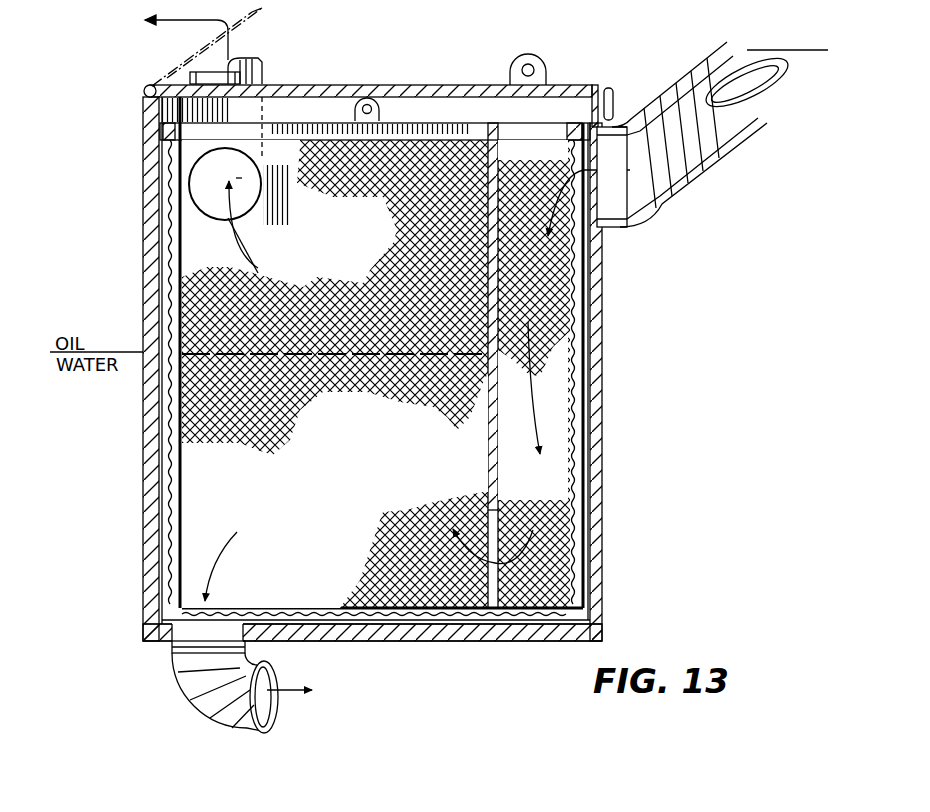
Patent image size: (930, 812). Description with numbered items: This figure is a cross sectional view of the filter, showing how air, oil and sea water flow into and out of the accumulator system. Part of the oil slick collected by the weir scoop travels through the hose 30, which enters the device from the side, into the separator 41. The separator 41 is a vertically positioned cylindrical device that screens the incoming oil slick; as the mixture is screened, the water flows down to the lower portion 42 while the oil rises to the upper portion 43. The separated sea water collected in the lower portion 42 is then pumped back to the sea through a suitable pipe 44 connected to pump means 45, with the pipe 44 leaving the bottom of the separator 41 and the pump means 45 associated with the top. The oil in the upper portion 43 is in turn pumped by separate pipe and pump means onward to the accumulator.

The hose 30 is at (722, 164).
The separator 41 is at (602, 456).
The lower portion 42 is at (290, 504).
The upper portion 43 is at (378, 249).
The pipe 44 is at (183, 687).
The pump means 45 is at (262, 78).